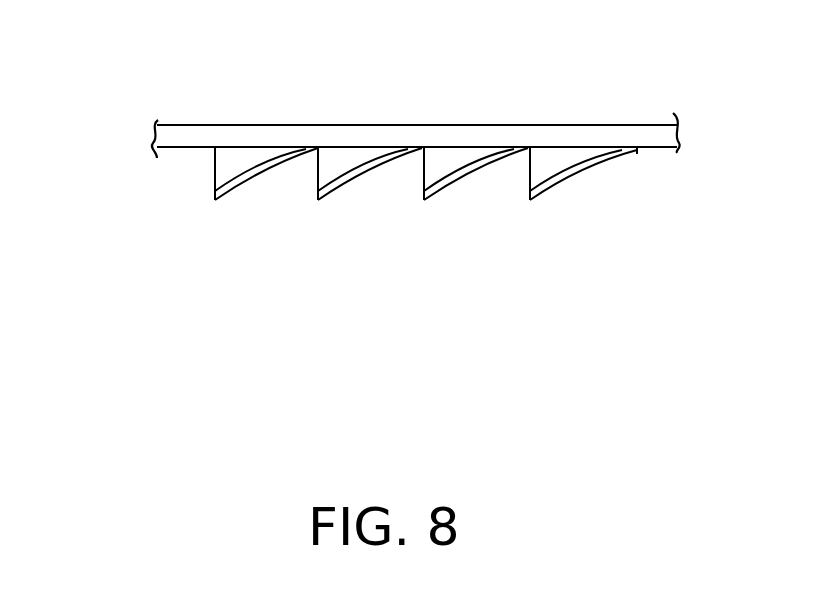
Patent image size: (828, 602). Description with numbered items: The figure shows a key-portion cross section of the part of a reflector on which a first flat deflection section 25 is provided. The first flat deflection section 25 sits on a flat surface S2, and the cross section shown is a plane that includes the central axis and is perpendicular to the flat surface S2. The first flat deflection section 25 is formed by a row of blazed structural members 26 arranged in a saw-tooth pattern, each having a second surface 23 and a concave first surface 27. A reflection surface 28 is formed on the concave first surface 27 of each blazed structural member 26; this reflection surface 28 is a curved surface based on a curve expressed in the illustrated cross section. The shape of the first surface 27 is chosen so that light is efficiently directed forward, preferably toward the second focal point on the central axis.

The flat surface S2 is at (178, 149).
The first flat deflection section 25 is at (244, 229).
The second surface 23 is at (428, 167).
The first surface 27 is at (487, 152).
The blazed structural member 26 is at (570, 155).
The reflection surface 28 is at (592, 166).